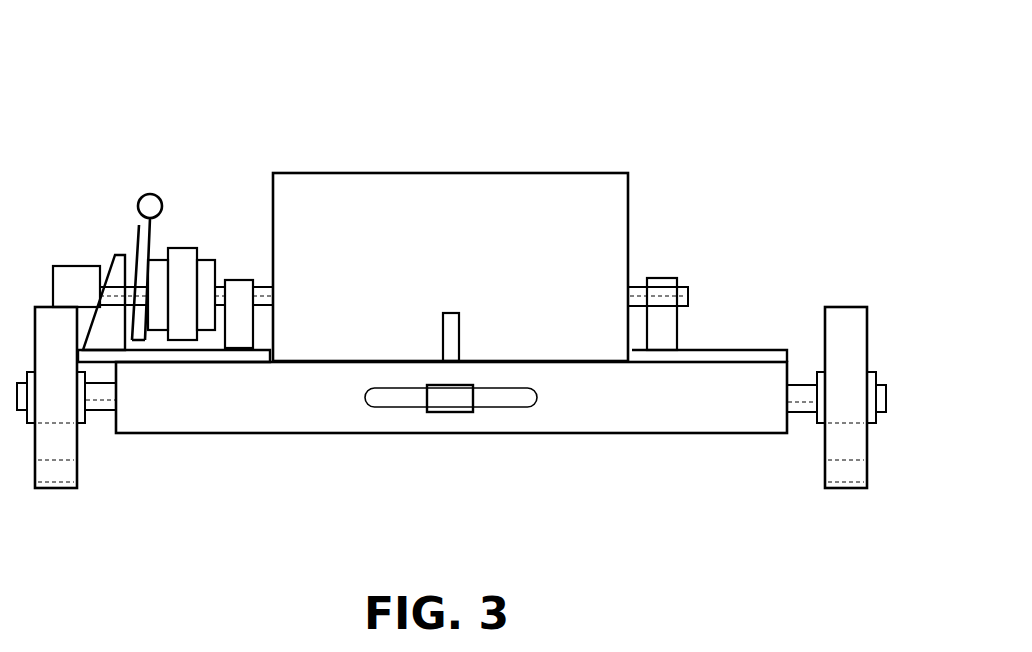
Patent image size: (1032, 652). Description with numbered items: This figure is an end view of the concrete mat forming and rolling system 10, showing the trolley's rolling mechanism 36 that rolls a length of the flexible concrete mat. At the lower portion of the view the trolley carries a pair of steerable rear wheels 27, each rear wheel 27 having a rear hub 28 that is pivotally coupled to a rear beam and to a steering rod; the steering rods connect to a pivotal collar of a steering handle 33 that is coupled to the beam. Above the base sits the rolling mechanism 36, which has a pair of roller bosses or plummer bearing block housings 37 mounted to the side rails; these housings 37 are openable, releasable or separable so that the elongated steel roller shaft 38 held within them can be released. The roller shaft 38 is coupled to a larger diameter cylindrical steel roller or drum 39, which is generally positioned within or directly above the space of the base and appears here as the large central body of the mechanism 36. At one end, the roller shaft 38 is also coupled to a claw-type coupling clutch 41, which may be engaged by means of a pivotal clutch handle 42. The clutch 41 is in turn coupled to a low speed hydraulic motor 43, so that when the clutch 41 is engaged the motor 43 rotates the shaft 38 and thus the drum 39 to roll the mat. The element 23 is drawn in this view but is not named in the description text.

The concrete mat forming and rolling system 10 is at (875, 207).
The base frame member 23 is at (685, 422).
The rear wheel 27 is at (857, 468).
The rear hub 28 is at (822, 368).
The steering handle 33 is at (453, 412).
The rolling mechanism 36 is at (588, 143).
The plummer bearing block housing 37 is at (668, 300).
The roller shaft 38 is at (637, 313).
The drum 39 is at (553, 332).
The coupling clutch 41 is at (183, 333).
The clutch handle 42 is at (160, 208).
The hydraulic motor 43 is at (72, 280).